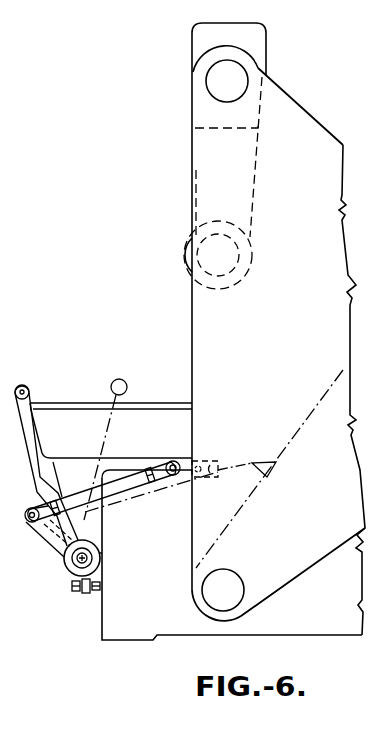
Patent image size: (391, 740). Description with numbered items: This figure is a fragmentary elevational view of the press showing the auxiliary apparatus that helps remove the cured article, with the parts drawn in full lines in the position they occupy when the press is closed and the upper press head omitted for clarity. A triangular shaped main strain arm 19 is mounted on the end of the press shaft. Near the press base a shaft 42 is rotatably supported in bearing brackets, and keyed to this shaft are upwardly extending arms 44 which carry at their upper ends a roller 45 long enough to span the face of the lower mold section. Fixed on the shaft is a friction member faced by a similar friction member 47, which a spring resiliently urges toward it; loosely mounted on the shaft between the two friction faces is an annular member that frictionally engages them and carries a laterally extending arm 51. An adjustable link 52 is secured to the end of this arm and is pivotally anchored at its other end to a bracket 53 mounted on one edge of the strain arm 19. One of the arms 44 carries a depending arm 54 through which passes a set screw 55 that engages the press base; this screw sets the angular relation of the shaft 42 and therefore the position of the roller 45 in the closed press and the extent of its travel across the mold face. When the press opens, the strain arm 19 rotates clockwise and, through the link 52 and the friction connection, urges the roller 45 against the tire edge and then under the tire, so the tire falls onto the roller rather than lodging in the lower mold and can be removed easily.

The main strain arm 19 is at (225, 331).
The shaft 42 is at (65, 565).
The upwardly extending arms 44 is at (36, 482).
The roller 45 is at (22, 385).
The friction member 47 is at (100, 553).
The laterally extending arm 51 is at (44, 531).
The adjustable link 52 is at (79, 494).
The bracket 53 is at (181, 465).
The depending arm 54 is at (90, 592).
The set screw 55 is at (72, 588).